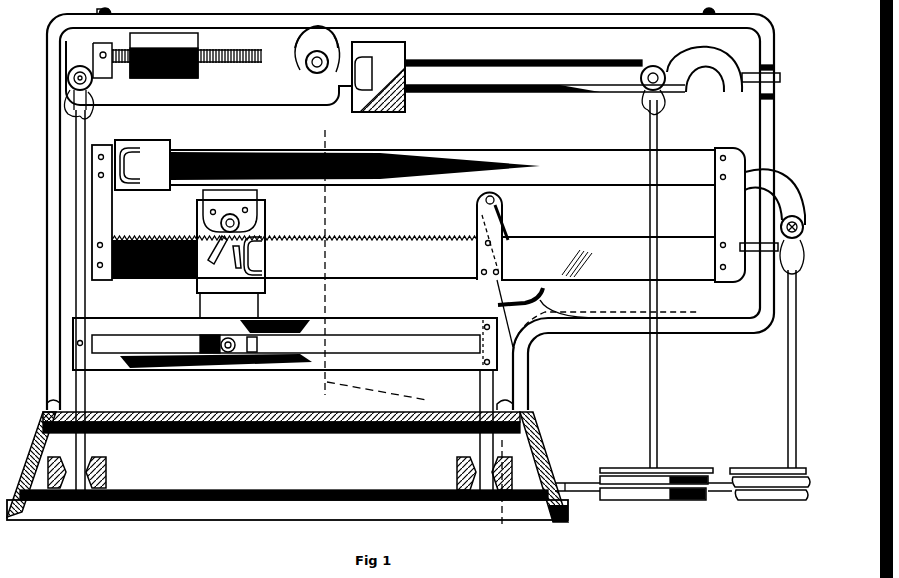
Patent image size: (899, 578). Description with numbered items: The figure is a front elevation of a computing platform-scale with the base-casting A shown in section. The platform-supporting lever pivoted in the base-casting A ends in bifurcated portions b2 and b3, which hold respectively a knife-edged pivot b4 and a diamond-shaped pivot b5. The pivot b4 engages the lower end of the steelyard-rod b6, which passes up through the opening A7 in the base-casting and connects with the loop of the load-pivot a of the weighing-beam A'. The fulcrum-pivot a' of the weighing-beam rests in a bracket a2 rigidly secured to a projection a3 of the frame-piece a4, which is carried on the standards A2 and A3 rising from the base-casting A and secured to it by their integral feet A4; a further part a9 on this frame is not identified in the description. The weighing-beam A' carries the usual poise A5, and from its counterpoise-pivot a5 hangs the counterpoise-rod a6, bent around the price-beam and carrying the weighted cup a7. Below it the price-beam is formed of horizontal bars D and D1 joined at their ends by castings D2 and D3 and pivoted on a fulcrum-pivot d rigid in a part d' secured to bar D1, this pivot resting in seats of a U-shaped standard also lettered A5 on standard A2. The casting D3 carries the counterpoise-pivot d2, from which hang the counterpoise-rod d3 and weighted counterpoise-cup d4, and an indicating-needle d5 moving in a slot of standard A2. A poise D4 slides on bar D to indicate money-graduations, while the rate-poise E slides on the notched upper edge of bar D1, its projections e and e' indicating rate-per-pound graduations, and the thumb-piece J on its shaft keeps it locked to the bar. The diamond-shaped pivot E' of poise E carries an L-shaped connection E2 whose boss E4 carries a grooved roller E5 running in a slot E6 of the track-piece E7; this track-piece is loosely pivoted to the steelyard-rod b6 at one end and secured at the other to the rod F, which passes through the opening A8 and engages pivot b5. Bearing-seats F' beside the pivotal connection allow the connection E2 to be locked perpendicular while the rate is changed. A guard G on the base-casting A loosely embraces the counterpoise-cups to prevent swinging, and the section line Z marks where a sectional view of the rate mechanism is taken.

The base-casting A is at (287, 467).
The standard A2 is at (774, 120).
The standard A3 is at (48, 133).
The integral feet A4 is at (47, 410).
The poise A5 is at (526, 197).
The opening A7 is at (88, 408).
The opening A8 is at (465, 404).
The weighing-beam A' is at (209, 65).
The load-pivot a is at (163, 81).
The fulcrum-pivot a' is at (323, 68).
The bracket a2 is at (317, 51).
The projection a3 is at (327, 24).
The frame-piece a4 is at (426, 18).
The counterpoise-pivot a5 is at (664, 74).
The counterpoise-rod a6 is at (659, 352).
The weighted cup a7 is at (690, 467).
The clamp bar a9 is at (750, 86).
The bifurcated portion b2 is at (108, 463).
The bifurcated portion b3 is at (455, 466).
The knife-edged pivot b4 is at (90, 458).
The diamond-shaped pivot b5 is at (482, 456).
The steelyard-rod b6 is at (86, 302).
The bar D is at (442, 167).
The bar D1 is at (608, 258).
The casting D2 is at (112, 208).
The casting D3 is at (760, 215).
The poise D4 is at (142, 165).
The fulcrum-pivot d is at (498, 237).
The part d' is at (515, 222).
The counterpoise-pivot d2 is at (781, 226).
The counterpoise-rod d3 is at (789, 352).
The weighted counterpoise-cup d4 is at (760, 467).
The indicating-needle d5 is at (755, 252).
The poise E is at (219, 279).
The diamond-shaped pivot E' is at (211, 232).
The L-shaped connection E2 is at (202, 305).
The boss E4 is at (255, 330).
The grooved roller E5 is at (232, 337).
The slot E6 is at (285, 344).
The track-piece E7 is at (443, 330).
The projection e is at (294, 257).
The projection e' is at (294, 229).
The rod F is at (230, 223).
The bearing-seats F' is at (343, 293).
The guard G is at (590, 486).
The thumb-piece J is at (220, 262).
The section line Z Z is at (412, 331).